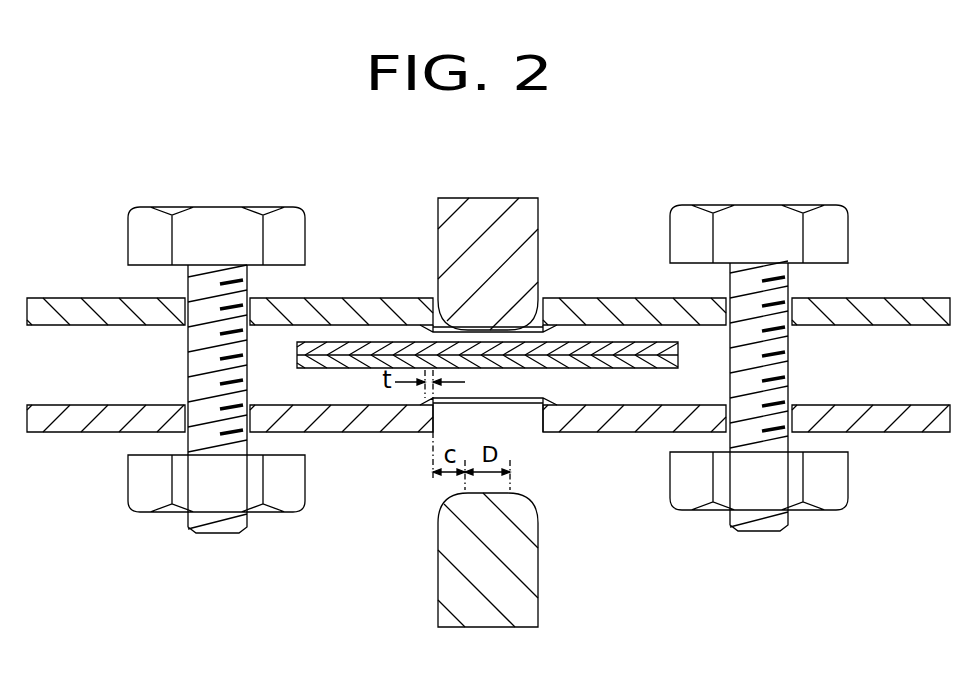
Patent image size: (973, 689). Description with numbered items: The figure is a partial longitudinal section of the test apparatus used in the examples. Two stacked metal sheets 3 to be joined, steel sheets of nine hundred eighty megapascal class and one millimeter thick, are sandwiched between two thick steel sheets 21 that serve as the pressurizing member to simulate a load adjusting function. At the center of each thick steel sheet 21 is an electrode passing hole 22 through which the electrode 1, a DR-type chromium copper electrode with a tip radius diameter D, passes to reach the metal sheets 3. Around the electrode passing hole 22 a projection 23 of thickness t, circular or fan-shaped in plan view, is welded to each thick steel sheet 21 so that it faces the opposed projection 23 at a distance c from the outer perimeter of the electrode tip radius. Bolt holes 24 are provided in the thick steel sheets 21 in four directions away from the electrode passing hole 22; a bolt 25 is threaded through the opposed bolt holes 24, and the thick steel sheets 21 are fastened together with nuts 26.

The electrode 1 is at (539, 223).
The metal sheets 3 is at (359, 342).
The thick steel sheets 21 is at (60, 298).
The electrode passing hole 22 is at (498, 419).
The projection 23 is at (553, 399).
The bolt holes 24 is at (217, 313).
The bolt 25 is at (220, 207).
The nuts 26 is at (168, 512).